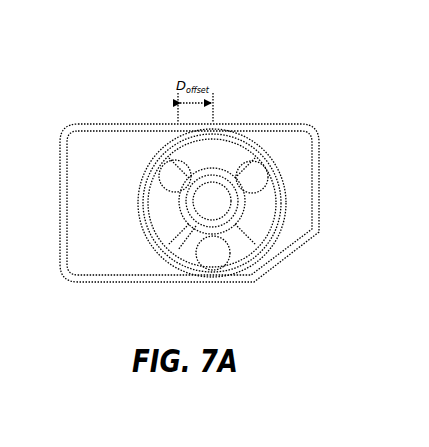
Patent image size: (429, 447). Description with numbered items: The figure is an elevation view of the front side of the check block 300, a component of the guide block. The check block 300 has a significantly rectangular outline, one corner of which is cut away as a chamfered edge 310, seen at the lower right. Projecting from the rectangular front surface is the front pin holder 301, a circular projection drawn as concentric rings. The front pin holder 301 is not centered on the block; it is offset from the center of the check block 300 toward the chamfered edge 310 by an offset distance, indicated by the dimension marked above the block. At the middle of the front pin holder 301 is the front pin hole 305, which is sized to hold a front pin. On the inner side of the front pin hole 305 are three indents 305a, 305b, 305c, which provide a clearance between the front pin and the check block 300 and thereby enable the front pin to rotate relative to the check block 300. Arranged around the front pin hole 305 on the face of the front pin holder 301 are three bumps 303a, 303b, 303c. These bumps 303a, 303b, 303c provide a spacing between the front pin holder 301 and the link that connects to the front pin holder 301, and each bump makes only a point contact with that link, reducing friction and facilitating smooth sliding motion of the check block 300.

The check block 300 is at (328, 102).
The front pin holder 301 is at (246, 123).
The bump 303a is at (268, 172).
The bump 303b is at (161, 165).
The bump 303c is at (196, 252).
The front pin hole 305 is at (238, 231).
The indent 305a is at (168, 142).
The indent 305b is at (198, 222).
The indent 305c is at (241, 210).
The chamfered edge 310 is at (283, 265).